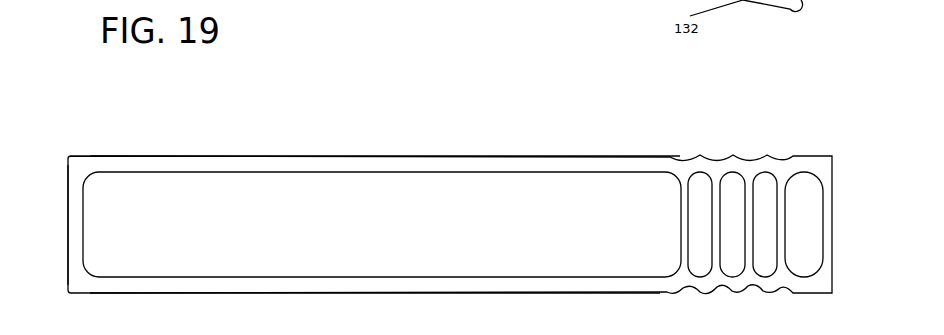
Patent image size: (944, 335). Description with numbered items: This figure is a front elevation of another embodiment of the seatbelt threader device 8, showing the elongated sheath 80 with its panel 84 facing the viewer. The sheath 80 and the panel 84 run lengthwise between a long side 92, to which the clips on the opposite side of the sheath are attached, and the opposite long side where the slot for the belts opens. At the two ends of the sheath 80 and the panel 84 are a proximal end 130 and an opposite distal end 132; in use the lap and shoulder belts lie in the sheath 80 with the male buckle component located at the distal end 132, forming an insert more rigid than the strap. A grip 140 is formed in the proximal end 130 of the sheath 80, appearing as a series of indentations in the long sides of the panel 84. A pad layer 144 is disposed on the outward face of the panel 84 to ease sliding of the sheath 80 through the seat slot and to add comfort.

The seatbelt threader device 8 is at (236, 126).
The elongated sheath 80 is at (337, 155).
The panel 84 is at (402, 163).
The long side 92 is at (103, 293).
The proximal end 130 is at (746, 157).
The distal end 132 is at (88, 155).
The grip 140 is at (708, 155).
The pad layer 144 is at (358, 240).